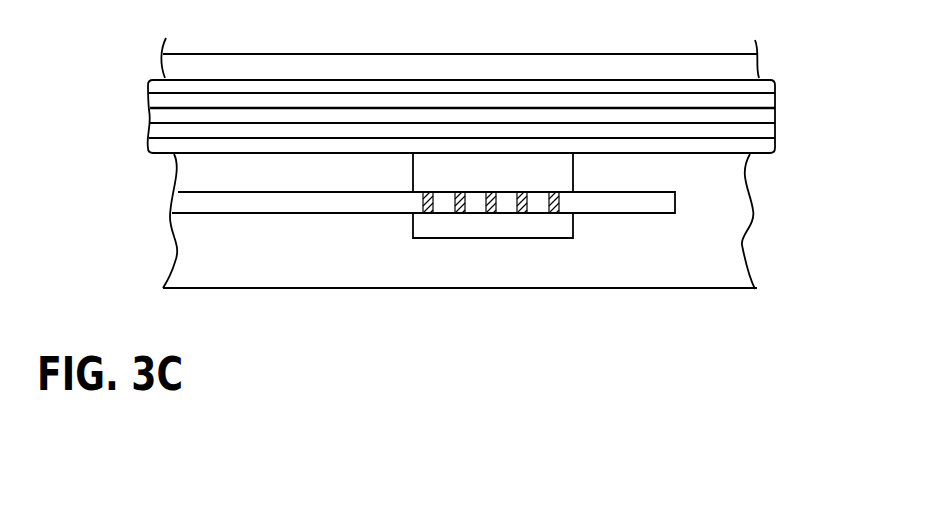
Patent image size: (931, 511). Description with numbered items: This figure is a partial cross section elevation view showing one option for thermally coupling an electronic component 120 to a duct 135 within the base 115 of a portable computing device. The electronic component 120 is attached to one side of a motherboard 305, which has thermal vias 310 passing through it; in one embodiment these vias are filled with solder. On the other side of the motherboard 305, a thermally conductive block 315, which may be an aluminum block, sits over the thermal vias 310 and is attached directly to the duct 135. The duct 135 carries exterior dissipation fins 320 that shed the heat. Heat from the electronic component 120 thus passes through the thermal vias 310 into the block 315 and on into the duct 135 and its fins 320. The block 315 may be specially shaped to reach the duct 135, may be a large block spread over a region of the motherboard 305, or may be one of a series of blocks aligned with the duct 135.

The base 115 is at (454, 297).
The electronic component 120 is at (565, 241).
The duct 135 is at (766, 73).
The motherboard 305 is at (683, 203).
The thermal vias 310 is at (415, 200).
The thermally conductive block 315 is at (528, 185).
The exterior dissipation fins 320 is at (137, 83).